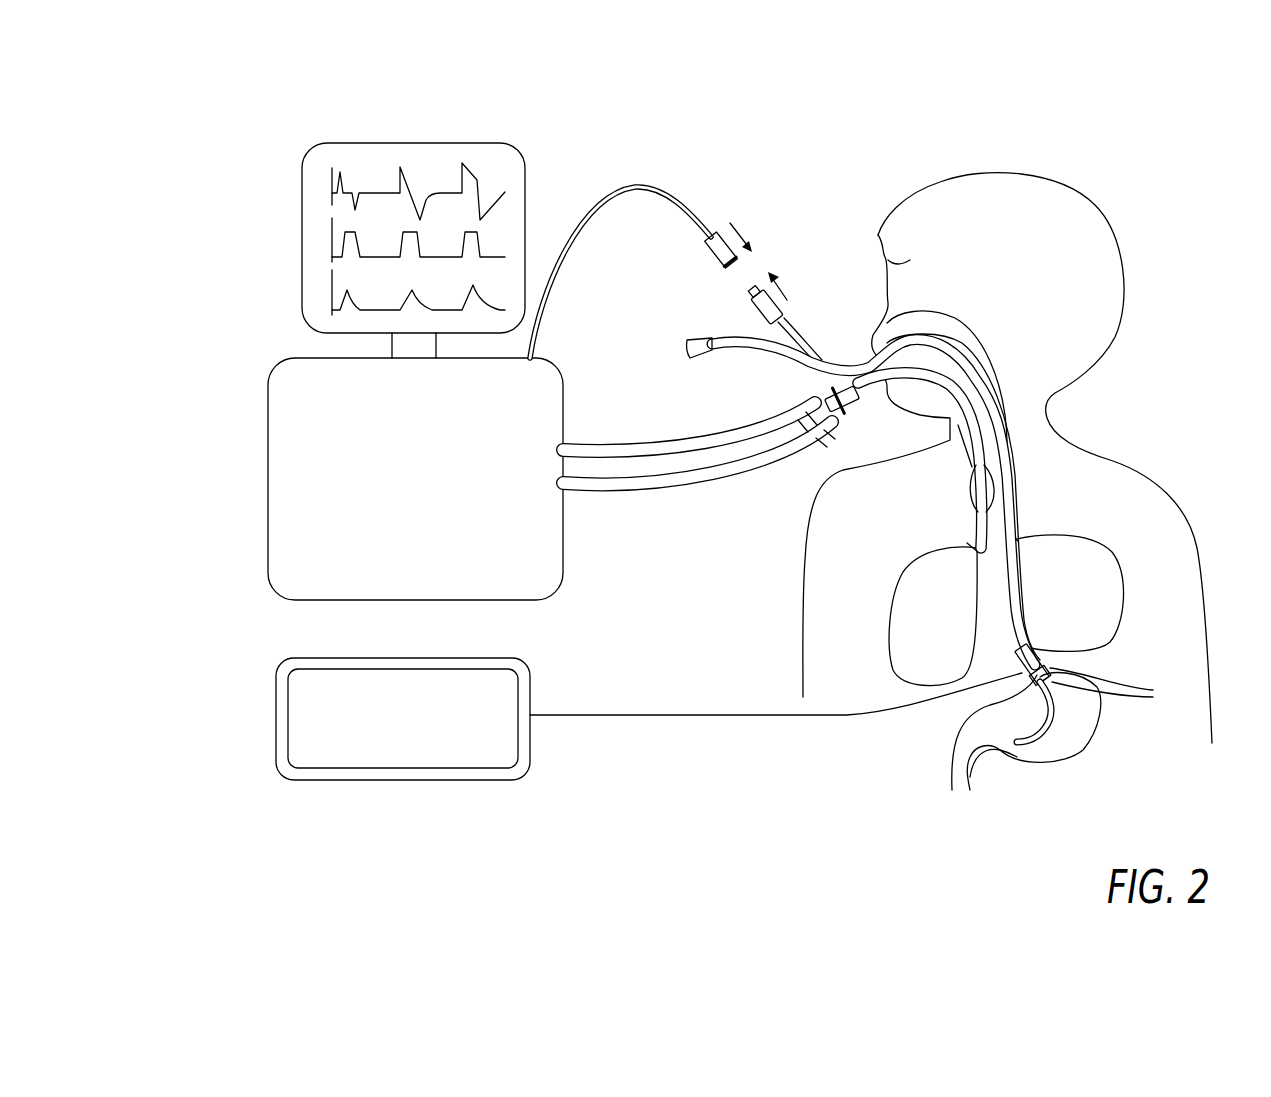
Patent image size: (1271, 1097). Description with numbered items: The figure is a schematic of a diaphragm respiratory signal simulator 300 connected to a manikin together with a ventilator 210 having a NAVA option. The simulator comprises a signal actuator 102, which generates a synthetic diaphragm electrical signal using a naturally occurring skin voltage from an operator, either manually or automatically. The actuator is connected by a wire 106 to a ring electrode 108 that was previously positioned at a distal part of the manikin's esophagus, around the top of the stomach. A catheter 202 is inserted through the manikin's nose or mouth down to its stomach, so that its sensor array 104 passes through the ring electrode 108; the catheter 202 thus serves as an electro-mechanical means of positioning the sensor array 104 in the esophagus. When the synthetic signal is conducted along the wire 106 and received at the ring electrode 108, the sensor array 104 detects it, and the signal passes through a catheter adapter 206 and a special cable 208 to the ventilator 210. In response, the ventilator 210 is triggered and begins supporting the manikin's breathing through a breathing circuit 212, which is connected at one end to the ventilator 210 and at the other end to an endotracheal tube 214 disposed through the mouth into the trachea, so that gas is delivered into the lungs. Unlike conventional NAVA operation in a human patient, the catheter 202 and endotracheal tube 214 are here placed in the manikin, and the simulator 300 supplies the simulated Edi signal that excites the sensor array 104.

The signal actuator 102 is at (276, 690).
The sensor array 104 is at (288, 727).
The wire 106 is at (752, 715).
The ring electrode 108 is at (1035, 676).
The catheter 202 is at (698, 337).
The catheter adapter 206 is at (787, 302).
The special cable 208 is at (673, 196).
The ventilator 210 is at (433, 493).
The breathing circuit 212 is at (608, 490).
The endotracheal tube 214 is at (890, 400).
The diaphragm respiratory signal simulator 300 is at (676, 683).